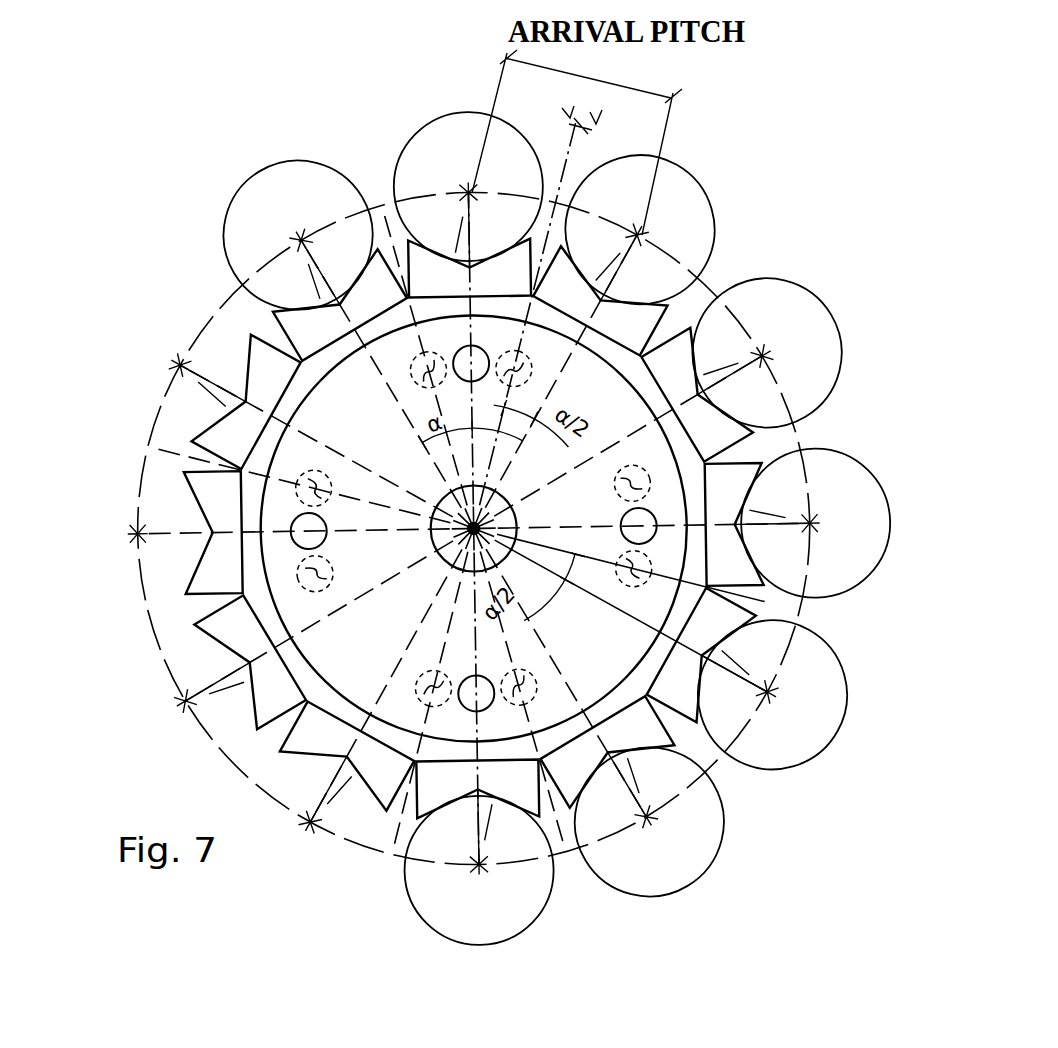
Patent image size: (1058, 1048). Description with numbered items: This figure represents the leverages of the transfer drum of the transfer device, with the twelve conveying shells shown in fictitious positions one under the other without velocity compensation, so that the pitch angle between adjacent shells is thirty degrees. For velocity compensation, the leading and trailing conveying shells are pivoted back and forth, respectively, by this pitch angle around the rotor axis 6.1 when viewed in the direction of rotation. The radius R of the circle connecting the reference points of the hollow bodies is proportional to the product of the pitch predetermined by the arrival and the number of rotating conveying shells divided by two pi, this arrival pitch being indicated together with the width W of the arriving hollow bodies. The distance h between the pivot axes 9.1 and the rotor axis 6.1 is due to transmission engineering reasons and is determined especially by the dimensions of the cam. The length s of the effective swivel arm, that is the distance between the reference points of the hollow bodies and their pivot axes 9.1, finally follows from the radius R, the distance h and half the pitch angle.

The rotor axis 6.1 is at (473, 528).
The pivot axis 9.1 is at (318, 578).
The length of the effective swivel arm s is at (701, 655).
The radius of the circle connecting the reference points of the hollow bodies R is at (631, 616).
The distance between the pivot axes and the rotor axis h is at (631, 568).
The container width W is at (569, 105).